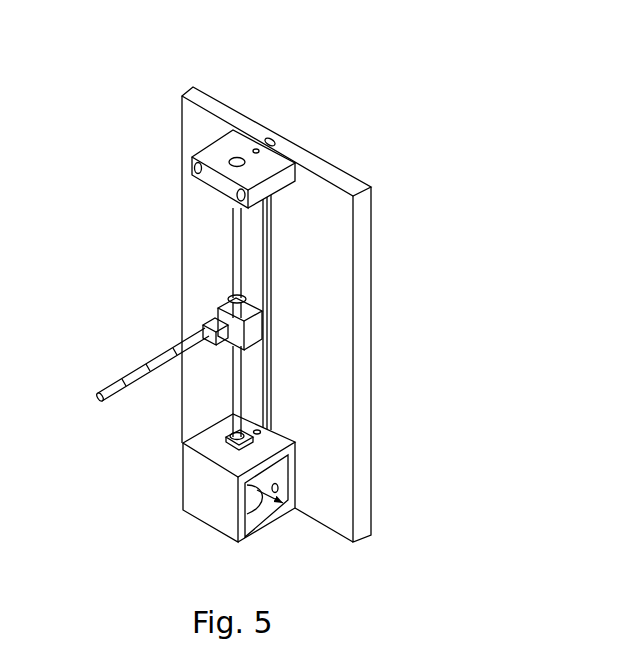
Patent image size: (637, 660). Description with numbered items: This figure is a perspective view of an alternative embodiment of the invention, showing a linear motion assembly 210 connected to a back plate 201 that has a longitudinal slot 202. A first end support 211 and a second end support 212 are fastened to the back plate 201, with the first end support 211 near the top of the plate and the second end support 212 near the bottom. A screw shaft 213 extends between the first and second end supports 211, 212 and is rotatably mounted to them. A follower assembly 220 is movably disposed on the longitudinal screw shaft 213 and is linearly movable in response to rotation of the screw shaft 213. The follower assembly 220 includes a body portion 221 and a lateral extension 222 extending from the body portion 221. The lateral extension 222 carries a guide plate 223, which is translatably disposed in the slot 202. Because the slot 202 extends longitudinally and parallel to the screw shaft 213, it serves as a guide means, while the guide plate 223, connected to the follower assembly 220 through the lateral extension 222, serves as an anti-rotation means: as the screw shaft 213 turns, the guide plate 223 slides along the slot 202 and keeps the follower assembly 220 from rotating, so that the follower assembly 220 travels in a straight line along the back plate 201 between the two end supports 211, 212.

The back plate 201 is at (318, 152).
The longitudinal slot 202 is at (273, 254).
The linear motion assembly 210 is at (178, 222).
The first end support 211 is at (215, 140).
The second end support 212 is at (208, 463).
The screw shaft 213 is at (228, 270).
The follower assembly 220 is at (205, 323).
The body portion 221 is at (265, 340).
The lateral extension 222 is at (268, 310).
The guide plate 223 is at (275, 295).